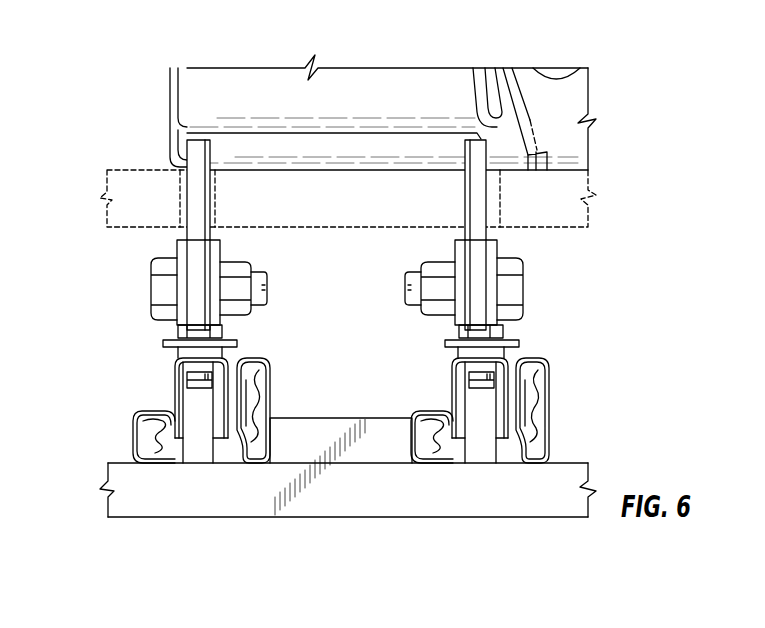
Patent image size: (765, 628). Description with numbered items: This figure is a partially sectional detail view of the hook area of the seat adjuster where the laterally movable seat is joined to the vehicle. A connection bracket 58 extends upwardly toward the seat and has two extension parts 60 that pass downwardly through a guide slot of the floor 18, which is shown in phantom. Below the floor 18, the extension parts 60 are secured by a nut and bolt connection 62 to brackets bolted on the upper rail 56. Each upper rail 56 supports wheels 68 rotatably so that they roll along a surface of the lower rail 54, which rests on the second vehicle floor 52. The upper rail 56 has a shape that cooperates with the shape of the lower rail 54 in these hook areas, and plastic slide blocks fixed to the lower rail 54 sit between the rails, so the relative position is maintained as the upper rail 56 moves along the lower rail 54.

The connection bracket 58 is at (259, 78).
The floor 18 is at (140, 185).
The extension parts 60 is at (193, 207).
The nut and bolt connection 62 is at (163, 292).
The wheels 68 is at (198, 403).
The upper rail 56 is at (257, 383).
The lower rail 54 is at (135, 432).
The second vehicle floor 52 is at (358, 498).